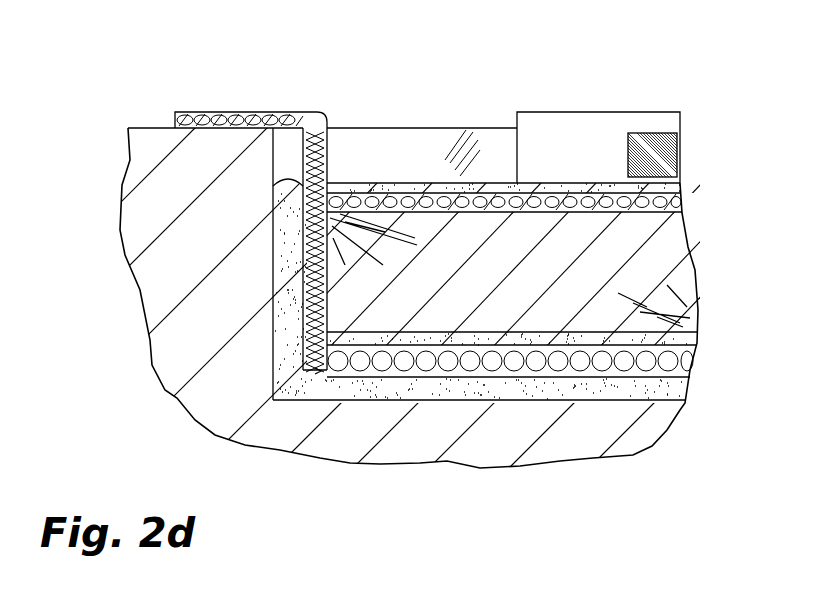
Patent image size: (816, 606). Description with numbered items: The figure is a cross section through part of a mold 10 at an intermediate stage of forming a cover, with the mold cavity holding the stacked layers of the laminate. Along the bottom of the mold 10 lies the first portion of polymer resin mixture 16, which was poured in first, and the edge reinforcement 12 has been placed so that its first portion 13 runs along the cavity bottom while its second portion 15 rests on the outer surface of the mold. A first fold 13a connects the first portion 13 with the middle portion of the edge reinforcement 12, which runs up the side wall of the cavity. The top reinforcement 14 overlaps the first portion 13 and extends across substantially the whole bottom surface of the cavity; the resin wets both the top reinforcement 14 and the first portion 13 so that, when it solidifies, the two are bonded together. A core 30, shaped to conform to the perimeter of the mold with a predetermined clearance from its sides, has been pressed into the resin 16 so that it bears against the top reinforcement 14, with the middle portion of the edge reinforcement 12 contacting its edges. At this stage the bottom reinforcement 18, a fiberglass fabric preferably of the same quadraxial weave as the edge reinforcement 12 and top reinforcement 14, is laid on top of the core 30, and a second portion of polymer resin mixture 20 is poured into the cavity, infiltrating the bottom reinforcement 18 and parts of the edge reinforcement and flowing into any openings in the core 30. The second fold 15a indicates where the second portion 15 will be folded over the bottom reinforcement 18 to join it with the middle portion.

The mold 10 is at (150, 118).
The edge reinforcement 12 is at (331, 150).
The first portion of edge reinforcement 13 is at (371, 335).
The first fold 13a is at (318, 370).
The top reinforcement 14 is at (593, 378).
The second portion of edge reinforcement 15 is at (232, 110).
The second fold 15a is at (318, 116).
The first portion of polymer resin mixture 16 is at (274, 315).
The bottom reinforcement 18 is at (378, 183).
The second portion of polymer resin mixture 20 is at (500, 181).
The core 30 is at (430, 250).